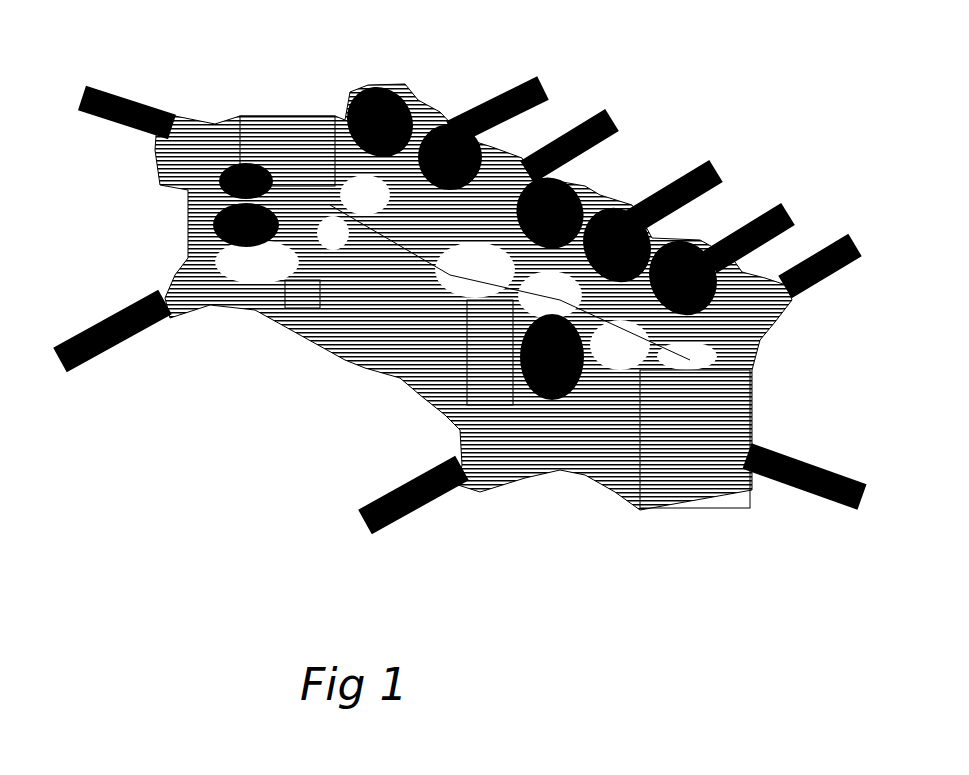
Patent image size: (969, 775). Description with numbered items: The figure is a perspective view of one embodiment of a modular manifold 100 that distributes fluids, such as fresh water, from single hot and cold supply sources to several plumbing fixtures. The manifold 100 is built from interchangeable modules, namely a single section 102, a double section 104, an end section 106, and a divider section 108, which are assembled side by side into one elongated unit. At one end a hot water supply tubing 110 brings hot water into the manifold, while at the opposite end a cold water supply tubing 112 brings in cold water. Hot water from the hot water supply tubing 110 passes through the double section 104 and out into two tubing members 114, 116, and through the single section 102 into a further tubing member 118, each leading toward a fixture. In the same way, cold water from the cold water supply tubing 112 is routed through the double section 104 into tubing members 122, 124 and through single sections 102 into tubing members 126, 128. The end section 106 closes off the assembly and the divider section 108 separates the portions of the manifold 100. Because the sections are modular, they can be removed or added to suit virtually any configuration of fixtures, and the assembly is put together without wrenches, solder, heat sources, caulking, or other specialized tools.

The modular manifold 100 is at (180, 472).
The single section 102 is at (300, 305).
The double section 104 is at (247, 310).
The end section 106 is at (268, 128).
The divider section 108 is at (360, 335).
The hot water supply tubing 110 is at (122, 95).
The cold water supply tubing 112 is at (835, 470).
The tubing member 114 is at (73, 338).
The tubing member 116 is at (494, 87).
The tubing member 118 is at (582, 122).
The tubing member 122 is at (400, 523).
The tubing member 124 is at (822, 284).
The tubing member 126 is at (752, 208).
The tubing member 128 is at (678, 172).